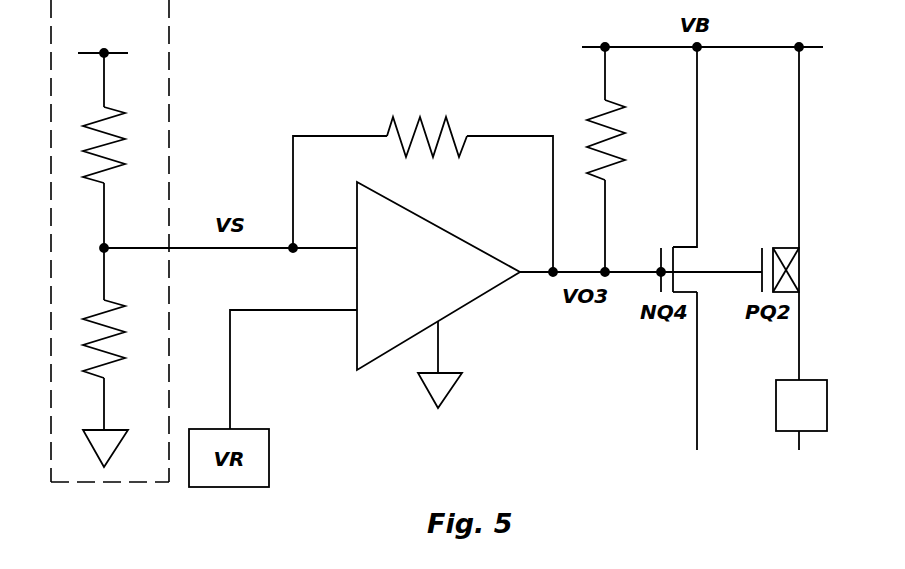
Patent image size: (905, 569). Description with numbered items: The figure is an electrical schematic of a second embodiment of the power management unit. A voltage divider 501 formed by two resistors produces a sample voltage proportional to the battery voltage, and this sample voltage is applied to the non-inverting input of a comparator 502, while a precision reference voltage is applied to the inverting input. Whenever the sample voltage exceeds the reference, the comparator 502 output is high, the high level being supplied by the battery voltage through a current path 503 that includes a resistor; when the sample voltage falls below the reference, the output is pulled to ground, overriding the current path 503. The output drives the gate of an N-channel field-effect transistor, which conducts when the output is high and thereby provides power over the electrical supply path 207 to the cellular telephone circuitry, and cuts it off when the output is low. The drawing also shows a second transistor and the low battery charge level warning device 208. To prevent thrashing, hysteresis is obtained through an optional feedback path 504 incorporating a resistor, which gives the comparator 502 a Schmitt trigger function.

The voltage divider 501 is at (170, 80).
The comparator 502 is at (399, 282).
The current path 503 is at (603, 83).
The feedback path 504 is at (292, 175).
The electrical supply path 207 is at (697, 412).
The low battery charge level warning device 208 is at (783, 416).